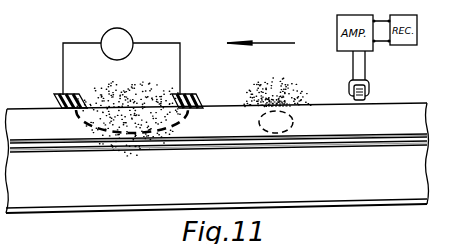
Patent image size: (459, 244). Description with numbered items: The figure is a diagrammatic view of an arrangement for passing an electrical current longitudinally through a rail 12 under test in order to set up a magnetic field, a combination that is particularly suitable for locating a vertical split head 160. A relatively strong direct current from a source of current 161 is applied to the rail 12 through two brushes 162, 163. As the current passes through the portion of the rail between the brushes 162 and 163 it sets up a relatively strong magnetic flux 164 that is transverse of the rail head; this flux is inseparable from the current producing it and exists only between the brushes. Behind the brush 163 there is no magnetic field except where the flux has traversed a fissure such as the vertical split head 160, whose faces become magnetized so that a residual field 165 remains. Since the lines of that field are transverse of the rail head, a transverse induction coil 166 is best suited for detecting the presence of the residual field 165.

The metal strip / workpiece 12 is at (277, 57).
The vertical split head 160 is at (293, 121).
The source of current 161 is at (125, 31).
The brush 162 is at (74, 96).
The brush 163 is at (185, 94).
The magnetic flux 164 is at (133, 94).
The residual field 165 is at (289, 87).
The transverse induction coil 166 is at (371, 86).